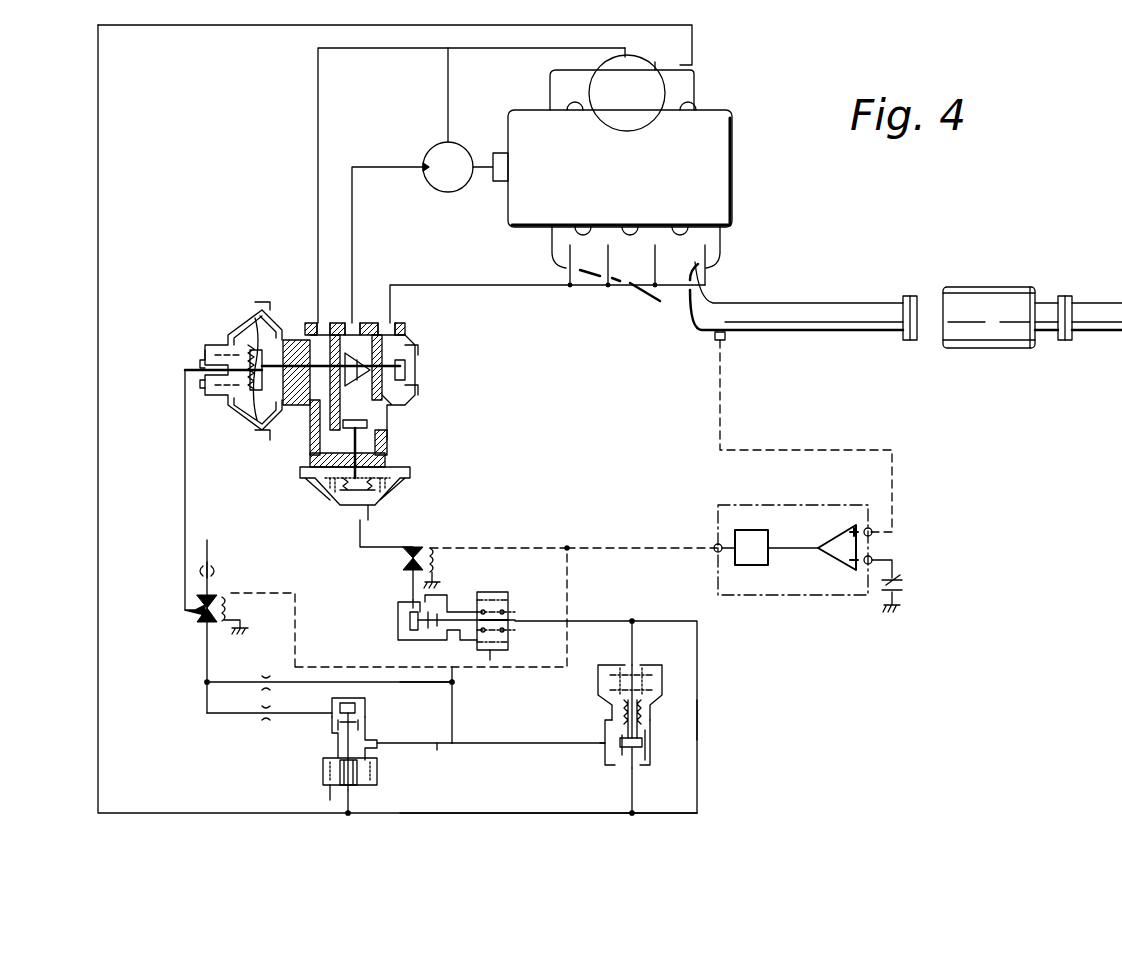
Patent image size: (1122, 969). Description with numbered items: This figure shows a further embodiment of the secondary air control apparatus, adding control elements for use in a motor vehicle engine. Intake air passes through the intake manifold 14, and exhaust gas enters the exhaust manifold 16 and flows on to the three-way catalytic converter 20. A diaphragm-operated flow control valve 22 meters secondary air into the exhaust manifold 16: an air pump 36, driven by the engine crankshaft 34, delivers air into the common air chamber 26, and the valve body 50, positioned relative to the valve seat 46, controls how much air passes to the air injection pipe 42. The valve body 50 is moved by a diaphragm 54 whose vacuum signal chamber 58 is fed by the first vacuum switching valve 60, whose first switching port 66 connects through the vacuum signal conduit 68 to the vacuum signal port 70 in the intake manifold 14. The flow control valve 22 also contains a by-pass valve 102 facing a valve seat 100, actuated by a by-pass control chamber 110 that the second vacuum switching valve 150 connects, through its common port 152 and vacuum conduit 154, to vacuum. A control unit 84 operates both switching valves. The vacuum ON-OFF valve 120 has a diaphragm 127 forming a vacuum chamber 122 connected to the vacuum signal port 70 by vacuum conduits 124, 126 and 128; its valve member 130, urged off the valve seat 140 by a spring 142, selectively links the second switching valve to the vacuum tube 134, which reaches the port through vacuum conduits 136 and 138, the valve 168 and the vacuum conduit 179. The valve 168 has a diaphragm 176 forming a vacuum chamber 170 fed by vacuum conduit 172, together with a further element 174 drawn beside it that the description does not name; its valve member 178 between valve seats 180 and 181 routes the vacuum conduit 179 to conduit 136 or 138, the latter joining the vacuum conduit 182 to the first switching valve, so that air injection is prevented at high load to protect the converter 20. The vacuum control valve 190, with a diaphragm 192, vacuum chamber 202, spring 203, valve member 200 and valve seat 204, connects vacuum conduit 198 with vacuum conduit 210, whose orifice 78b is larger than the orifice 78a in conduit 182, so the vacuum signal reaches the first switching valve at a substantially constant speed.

The intake manifold 14 is at (700, 98).
The exhaust manifold 16 is at (712, 230).
The three-way catalytic converter 20 is at (988, 287).
The flow control valve 22 is at (445, 329).
The common air chamber 26 is at (360, 322).
The crankshaft 34 is at (484, 169).
The air pump 36 is at (437, 200).
The air injection pipe 42 is at (486, 285).
The valve seat 46 is at (405, 350).
The valve body 50 is at (335, 322).
The diaphragm 54 is at (242, 320).
The vacuum signal chamber 58 is at (244, 422).
The vacuum switching valve 60 is at (188, 626).
The first switching port 66 is at (197, 608).
The vacuum signal conduit 68 is at (232, 813).
The vacuum signal port 70 is at (694, 64).
The orifice 78a is at (269, 672).
The orifice 78b is at (270, 725).
The control unit 84 is at (826, 595).
The valve seat 100 is at (376, 438).
The by-pass valve 102 is at (372, 415).
The by-pass control chamber 110 is at (330, 492).
The vacuum ON-OFF valve 120 is at (504, 591).
The vacuum chamber 122 is at (508, 594).
The vacuum conduit 124 is at (618, 621).
The vacuum conduit 126 is at (697, 718).
The diaphragm 127 is at (492, 650).
The vacuum conduit 128 is at (560, 813).
The valve member 130 is at (406, 630).
The vacuum tube 134 is at (456, 684).
The vacuum conduit 136 is at (455, 726).
The vacuum conduit 138 is at (520, 745).
The valve seat 140 is at (430, 606).
The spring 142 is at (500, 628).
The vacuum switching valve 150 is at (372, 560).
The common port 152 is at (400, 560).
The vacuum conduit 154 is at (400, 621).
The valve 168 is at (649, 717).
The vacuum chamber 170 is at (600, 680).
The vacuum conduit 172 is at (630, 645).
The diaphragm 174 is at (670, 675).
The diaphragm 176 is at (665, 690).
The valve member 178 is at (642, 742).
The vacuum conduit 179 is at (630, 785).
The valve seat 180 is at (636, 760).
The valve seat 181 is at (615, 728).
The vacuum conduit 182 is at (428, 683).
The vacuum control valve 190 is at (334, 771).
The diaphragm 192 is at (370, 765).
The vacuum conduit 198 is at (441, 745).
The valve member 200 is at (334, 709).
The vacuum chamber 202 is at (370, 785).
The spring 203 is at (334, 795).
The valve seat 204 is at (362, 728).
The vacuum conduit 210 is at (208, 715).